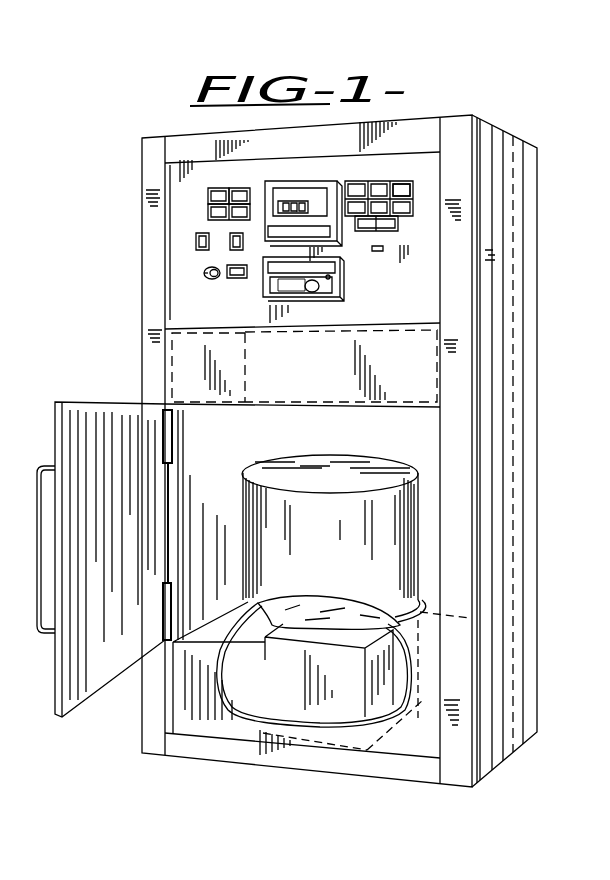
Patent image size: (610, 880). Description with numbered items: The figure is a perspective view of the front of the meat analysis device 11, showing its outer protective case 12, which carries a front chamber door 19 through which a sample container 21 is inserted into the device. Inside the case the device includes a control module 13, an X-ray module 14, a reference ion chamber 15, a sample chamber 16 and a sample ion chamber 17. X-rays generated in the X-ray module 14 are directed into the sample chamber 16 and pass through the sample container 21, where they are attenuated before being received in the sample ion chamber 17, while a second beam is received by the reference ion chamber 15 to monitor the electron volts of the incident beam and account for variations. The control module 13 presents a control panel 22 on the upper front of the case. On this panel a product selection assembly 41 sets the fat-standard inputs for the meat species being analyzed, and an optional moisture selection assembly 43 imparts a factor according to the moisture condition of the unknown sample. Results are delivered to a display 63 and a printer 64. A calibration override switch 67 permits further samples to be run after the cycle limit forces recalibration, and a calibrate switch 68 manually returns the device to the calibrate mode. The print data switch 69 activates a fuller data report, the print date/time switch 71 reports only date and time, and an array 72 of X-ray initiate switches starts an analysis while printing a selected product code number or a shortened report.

The meat analysis device 11 is at (520, 252).
The outer protective case 12 is at (510, 558).
The control module 13 is at (172, 183).
The X-ray module 14 is at (430, 380).
The reference ion chamber 15 is at (190, 380).
The sample chamber 16 is at (420, 448).
The sample ion chamber 17 is at (356, 691).
The front chamber door 19 is at (142, 456).
The sample container 21 is at (336, 530).
The control panel 22 is at (416, 312).
The product selection assembly 41 is at (197, 241).
The moisture selection assembly 43 is at (230, 243).
The display 63 is at (334, 198).
The printer 64 is at (338, 280).
The calibration override switch 67 is at (211, 197).
The calibrate switch 68 is at (250, 197).
The print data switch 69 is at (245, 214).
The print date/time switch 71 is at (320, 202).
The array of X-ray initiate switches 72 is at (400, 183).